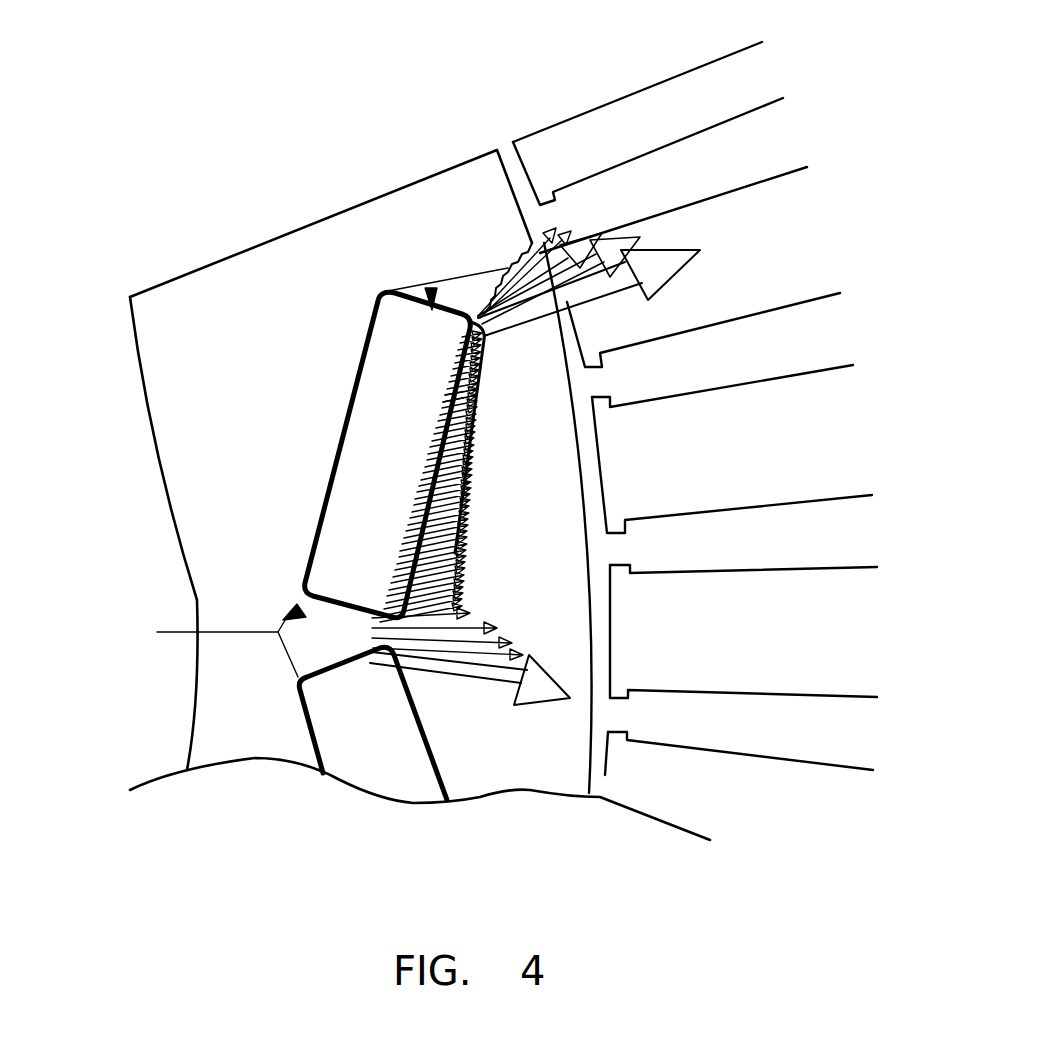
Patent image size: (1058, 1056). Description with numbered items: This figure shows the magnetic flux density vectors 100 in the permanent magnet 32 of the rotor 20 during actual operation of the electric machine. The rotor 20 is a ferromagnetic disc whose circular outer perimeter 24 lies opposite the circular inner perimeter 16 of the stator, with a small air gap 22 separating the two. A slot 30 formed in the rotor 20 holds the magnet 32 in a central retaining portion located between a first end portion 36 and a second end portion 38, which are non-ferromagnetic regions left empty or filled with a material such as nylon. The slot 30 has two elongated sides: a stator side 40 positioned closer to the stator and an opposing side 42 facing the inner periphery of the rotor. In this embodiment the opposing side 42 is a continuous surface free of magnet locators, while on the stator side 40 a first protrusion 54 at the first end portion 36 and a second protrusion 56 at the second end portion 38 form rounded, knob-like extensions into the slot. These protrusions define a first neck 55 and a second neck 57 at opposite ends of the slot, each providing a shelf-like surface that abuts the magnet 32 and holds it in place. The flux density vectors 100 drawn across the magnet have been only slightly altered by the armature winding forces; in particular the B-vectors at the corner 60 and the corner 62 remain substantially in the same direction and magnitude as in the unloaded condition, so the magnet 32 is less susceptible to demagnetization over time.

The circular inner perimeter 16 is at (607, 773).
The rotor 20 is at (148, 243).
The air gap 22 is at (593, 783).
The circular outer perimeter 24 is at (583, 770).
The slot 30 is at (405, 290).
The permanent magnet 32 is at (383, 370).
The first end portion 36 is at (460, 290).
The second end portion 38 is at (302, 638).
The stator side 40 is at (437, 547).
The opposing side 42 is at (345, 420).
The first protrusion 54 is at (468, 313).
The first neck 55 is at (408, 293).
The second protrusion 56 is at (372, 628).
The second neck 57 is at (310, 603).
The corner 60 is at (475, 413).
The corner 62 is at (318, 537).
The magnetic flux density vectors 100 is at (622, 237).